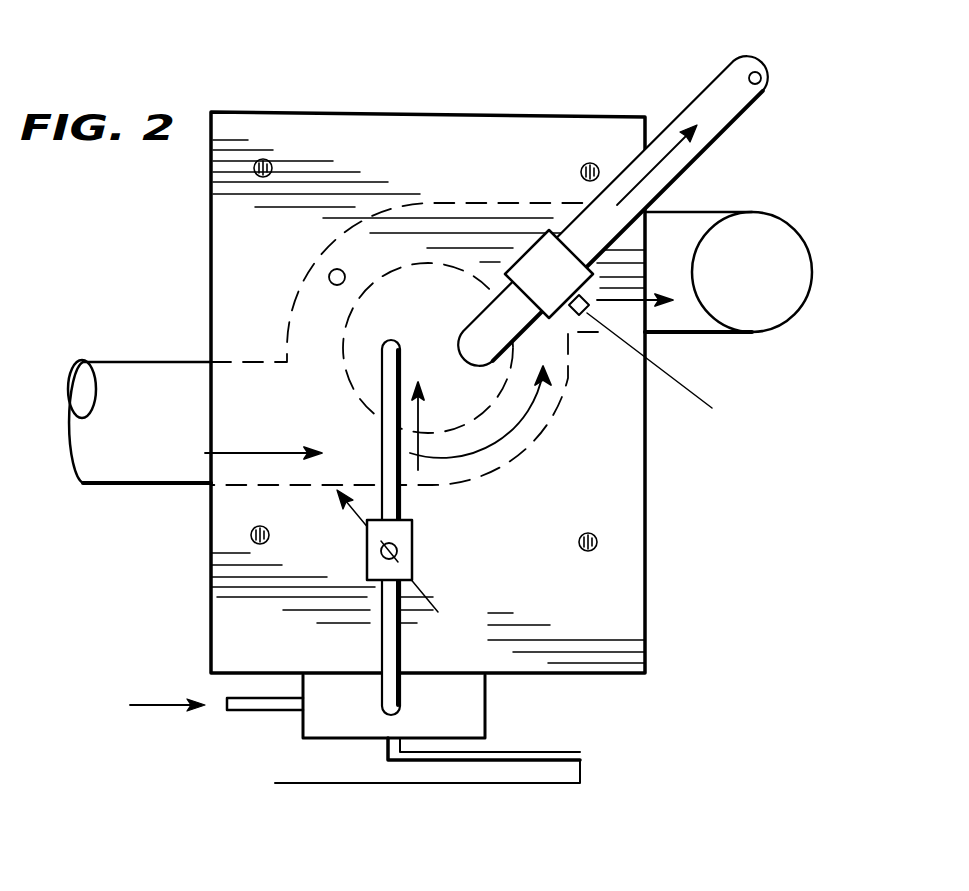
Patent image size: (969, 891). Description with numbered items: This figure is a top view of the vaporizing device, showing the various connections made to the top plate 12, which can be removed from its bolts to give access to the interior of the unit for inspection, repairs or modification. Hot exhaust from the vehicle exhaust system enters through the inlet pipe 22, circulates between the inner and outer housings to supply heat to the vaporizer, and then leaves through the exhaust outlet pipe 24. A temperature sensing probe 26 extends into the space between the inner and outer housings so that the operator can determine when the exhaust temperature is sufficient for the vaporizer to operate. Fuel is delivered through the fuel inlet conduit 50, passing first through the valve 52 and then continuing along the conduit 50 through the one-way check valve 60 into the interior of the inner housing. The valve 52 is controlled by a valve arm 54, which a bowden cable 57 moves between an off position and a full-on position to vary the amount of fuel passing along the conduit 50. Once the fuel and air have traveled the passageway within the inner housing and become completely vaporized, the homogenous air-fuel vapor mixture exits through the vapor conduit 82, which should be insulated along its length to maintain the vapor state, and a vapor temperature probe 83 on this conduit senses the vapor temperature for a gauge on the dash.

The plate 12 is at (305, 112).
The inlet pipe 22 is at (150, 362).
The exhaust outlet pipe 24 is at (790, 214).
The temperature sensing probe 26 is at (330, 271).
The fuel inlet conduit 50 is at (400, 650).
The valve 52 is at (485, 712).
The valve arm 54 is at (580, 757).
The bowden cable 57 is at (405, 783).
The one-way check valve 60 is at (412, 531).
The vapor conduit 82 is at (708, 85).
The vapor temperature probe 83 is at (585, 320).